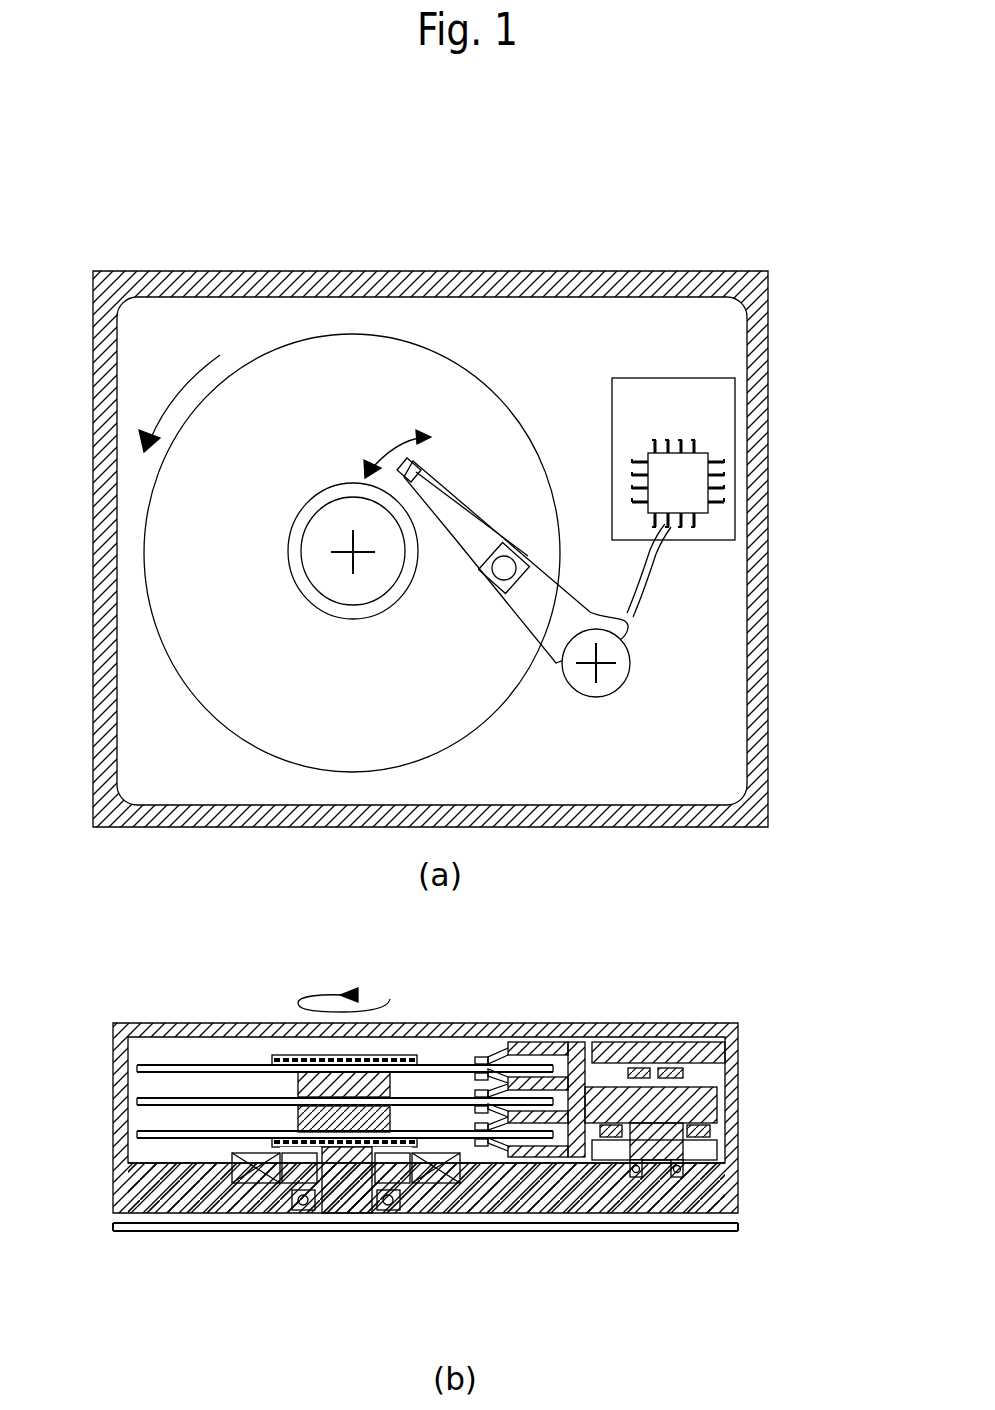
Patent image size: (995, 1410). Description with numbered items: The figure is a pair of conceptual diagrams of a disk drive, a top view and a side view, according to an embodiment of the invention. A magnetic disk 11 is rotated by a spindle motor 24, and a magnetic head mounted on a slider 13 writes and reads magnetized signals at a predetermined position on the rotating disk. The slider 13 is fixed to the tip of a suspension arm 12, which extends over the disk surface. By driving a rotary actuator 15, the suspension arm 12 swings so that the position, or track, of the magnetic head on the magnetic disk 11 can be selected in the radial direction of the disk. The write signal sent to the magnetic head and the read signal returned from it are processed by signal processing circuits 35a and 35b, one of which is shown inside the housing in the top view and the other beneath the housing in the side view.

The magnetic disk 11 is at (282, 398).
The suspension arm 12 is at (447, 538).
The slider 13 is at (413, 466).
The rotary actuator 15 is at (615, 692).
The spindle motor 24 is at (347, 1205).
The signal processing circuit 35a is at (692, 478).
The signal processing circuit 35b is at (648, 1232).